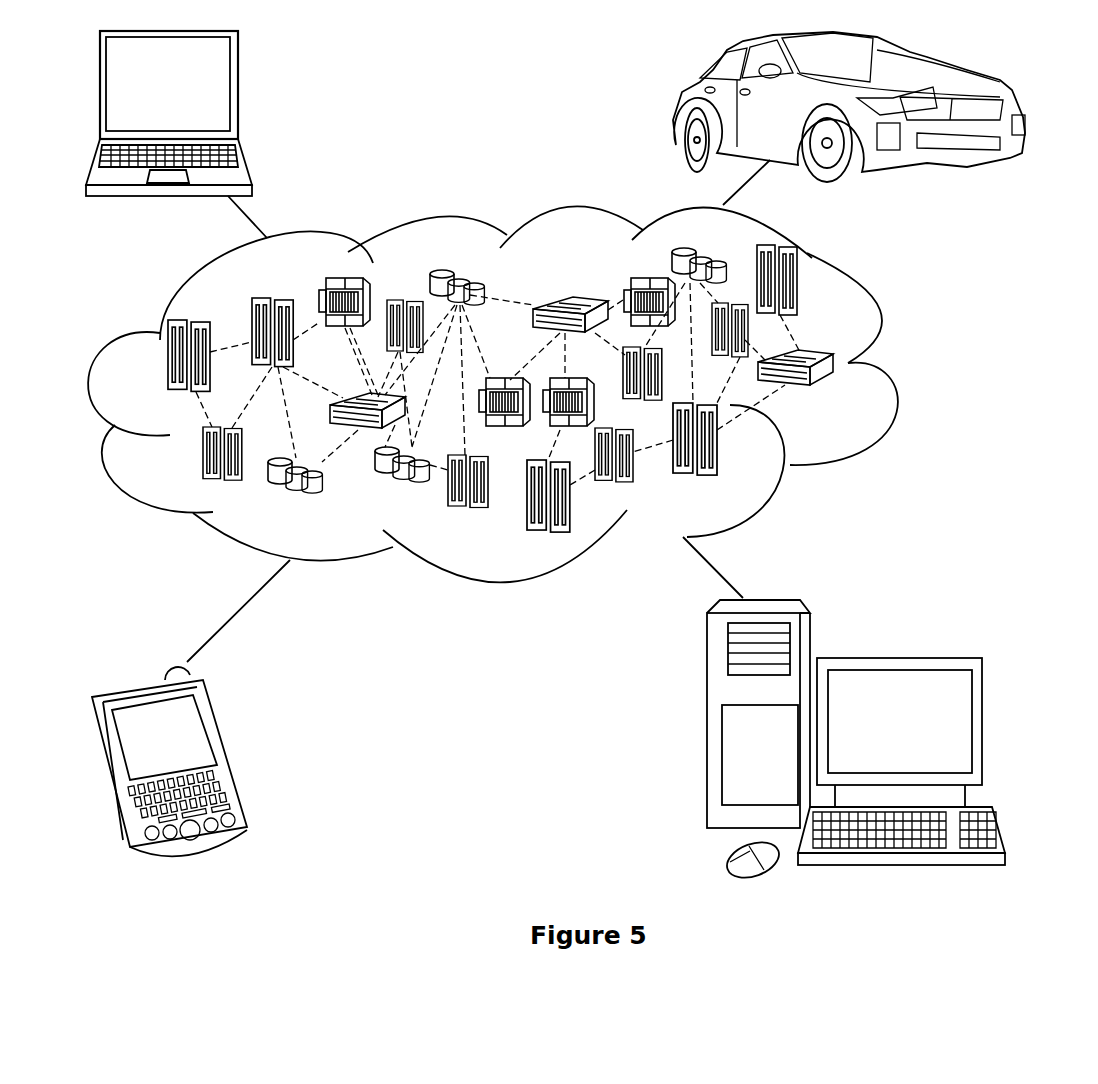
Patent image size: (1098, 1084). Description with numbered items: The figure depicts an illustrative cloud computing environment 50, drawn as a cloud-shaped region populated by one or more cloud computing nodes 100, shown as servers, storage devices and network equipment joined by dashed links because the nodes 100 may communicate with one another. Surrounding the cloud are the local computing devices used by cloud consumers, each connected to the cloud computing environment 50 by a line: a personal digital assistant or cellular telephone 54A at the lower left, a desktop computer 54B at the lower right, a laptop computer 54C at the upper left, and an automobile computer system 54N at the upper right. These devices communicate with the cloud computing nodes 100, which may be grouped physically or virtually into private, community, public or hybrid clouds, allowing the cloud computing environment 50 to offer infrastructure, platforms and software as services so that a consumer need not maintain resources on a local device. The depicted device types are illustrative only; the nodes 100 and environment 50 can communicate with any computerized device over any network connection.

The cloud computing environment 50 is at (898, 368).
The cloud computing nodes 100 is at (840, 397).
The personal digital assistant (PDA) or cellular telephone 54A is at (232, 752).
The desktop computer 54B is at (896, 656).
The laptop computer 54C is at (238, 93).
The automobile computer system 54N is at (676, 110).